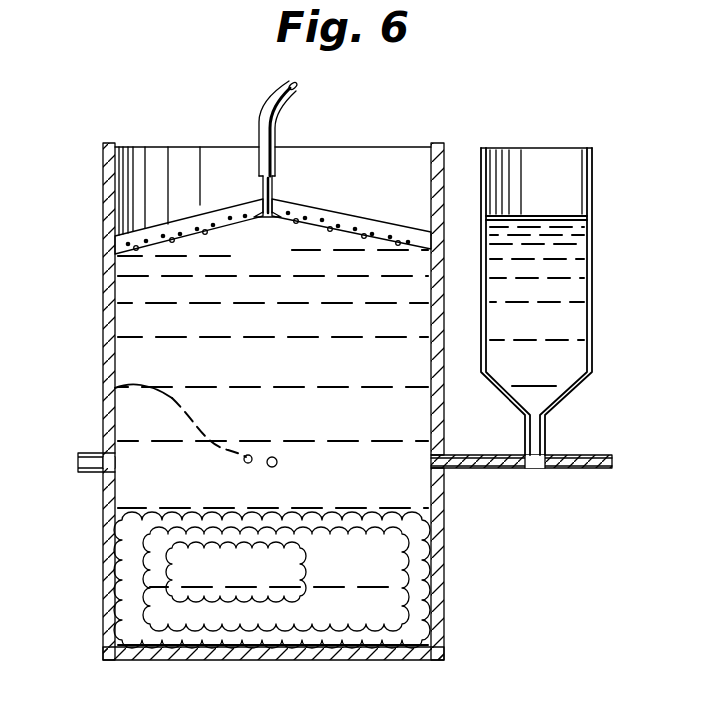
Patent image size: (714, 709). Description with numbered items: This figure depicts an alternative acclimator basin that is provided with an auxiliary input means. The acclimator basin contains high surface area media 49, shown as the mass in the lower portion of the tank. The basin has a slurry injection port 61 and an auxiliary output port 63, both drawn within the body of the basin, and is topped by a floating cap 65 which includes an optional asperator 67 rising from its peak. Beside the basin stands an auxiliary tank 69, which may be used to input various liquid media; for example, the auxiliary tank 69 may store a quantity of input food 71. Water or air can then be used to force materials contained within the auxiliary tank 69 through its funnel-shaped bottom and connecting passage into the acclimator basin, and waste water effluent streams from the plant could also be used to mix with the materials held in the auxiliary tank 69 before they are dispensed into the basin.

The high surface area media 49 is at (300, 548).
The slurry injection port 61 is at (277, 462).
The auxiliary output port 63 is at (115, 388).
The floating cap 65 is at (362, 222).
The asperator 67 is at (283, 119).
The auxiliary tank 69 is at (593, 319).
The input food 71 is at (535, 178).